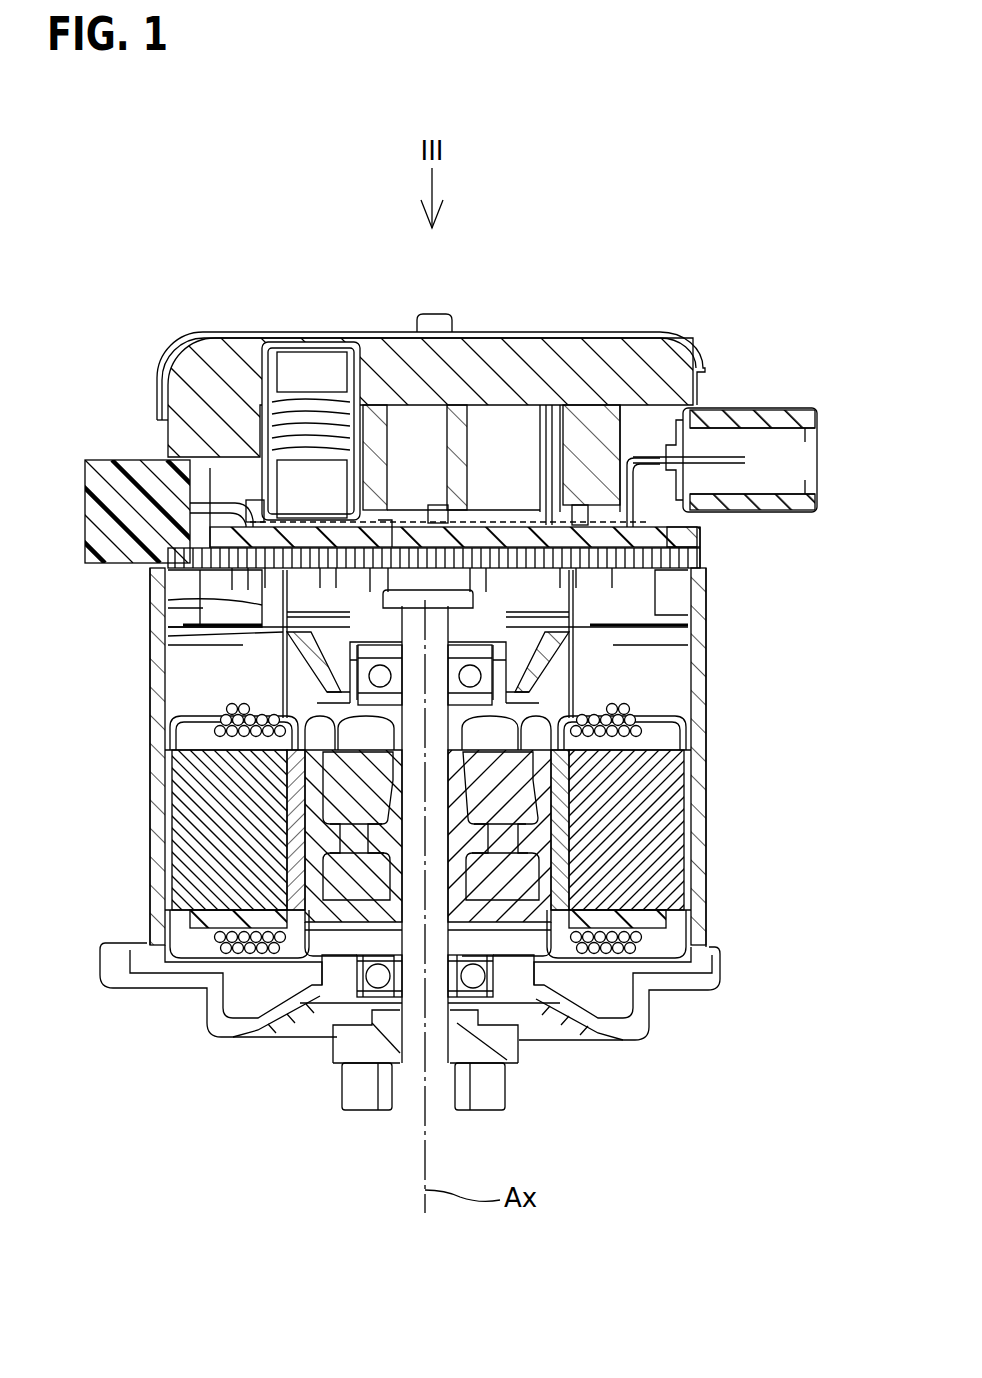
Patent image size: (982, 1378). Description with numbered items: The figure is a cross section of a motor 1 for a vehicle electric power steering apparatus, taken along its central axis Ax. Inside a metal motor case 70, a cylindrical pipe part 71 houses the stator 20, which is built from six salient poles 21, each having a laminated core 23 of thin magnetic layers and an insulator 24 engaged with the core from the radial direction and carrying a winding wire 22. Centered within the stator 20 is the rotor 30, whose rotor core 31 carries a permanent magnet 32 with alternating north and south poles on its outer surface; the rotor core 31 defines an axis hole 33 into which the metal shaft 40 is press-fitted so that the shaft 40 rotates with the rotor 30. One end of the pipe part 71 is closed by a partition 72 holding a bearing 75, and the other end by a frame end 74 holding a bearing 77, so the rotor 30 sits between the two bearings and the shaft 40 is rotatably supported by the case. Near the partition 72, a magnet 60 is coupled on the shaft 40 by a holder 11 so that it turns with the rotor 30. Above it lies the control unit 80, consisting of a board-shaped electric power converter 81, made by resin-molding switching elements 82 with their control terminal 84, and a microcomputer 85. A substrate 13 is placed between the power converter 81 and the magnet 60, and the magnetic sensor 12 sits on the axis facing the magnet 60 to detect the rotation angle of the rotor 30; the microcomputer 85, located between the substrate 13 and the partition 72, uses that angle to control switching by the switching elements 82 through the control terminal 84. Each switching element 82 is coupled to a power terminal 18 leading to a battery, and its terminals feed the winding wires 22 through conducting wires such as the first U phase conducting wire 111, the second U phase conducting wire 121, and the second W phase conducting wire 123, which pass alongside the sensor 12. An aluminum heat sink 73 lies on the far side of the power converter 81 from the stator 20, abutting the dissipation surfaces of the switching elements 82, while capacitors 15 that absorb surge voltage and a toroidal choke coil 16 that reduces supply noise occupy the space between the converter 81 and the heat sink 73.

The motor 1 is at (155, 250).
The holder 11 is at (500, 645).
The magnetic sensor 12 is at (458, 420).
The substrate 13 is at (207, 580).
The capacitor 15 is at (507, 415).
The choke coil 16 is at (295, 345).
The power terminal 18 is at (780, 463).
The stator 20 is at (690, 808).
The salient pole 21 is at (655, 822).
The winding wire 22 is at (220, 703).
The laminated core 23 is at (650, 848).
The insulator 24 is at (650, 930).
The rotor 30 is at (565, 885).
The rotor core 31 is at (330, 840).
The permanent magnet 32 is at (312, 858).
The axis hole 33 is at (415, 855).
The shaft 40 is at (440, 690).
The magnet 60 is at (470, 603).
The motor case 70 is at (145, 770).
The pipe part 71 is at (145, 798).
The partition 72 is at (273, 675).
The heat sink 73 is at (700, 390).
The frame end 74 is at (233, 1040).
The bearing 75 is at (273, 703).
The bearing 77 is at (500, 975).
The control unit 80 is at (628, 578).
The electric power converter 81 is at (700, 545).
The switching element 82 is at (255, 500).
The control terminal 84 is at (552, 405).
The microcomputer 85 is at (250, 637).
The conducting wire 111 is at (253, 603).
The conducting wire 121 is at (600, 615).
The conducting wire 123 is at (385, 520).